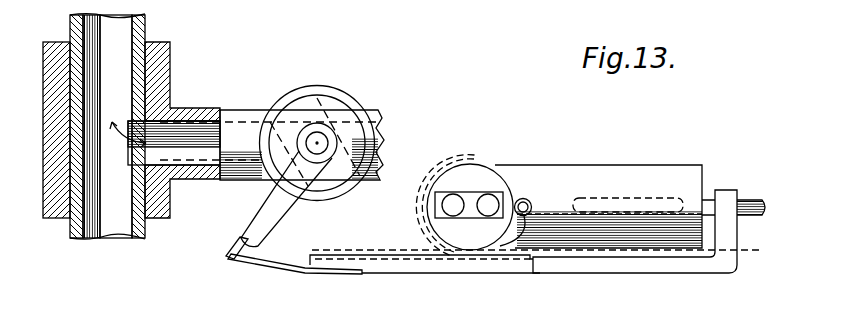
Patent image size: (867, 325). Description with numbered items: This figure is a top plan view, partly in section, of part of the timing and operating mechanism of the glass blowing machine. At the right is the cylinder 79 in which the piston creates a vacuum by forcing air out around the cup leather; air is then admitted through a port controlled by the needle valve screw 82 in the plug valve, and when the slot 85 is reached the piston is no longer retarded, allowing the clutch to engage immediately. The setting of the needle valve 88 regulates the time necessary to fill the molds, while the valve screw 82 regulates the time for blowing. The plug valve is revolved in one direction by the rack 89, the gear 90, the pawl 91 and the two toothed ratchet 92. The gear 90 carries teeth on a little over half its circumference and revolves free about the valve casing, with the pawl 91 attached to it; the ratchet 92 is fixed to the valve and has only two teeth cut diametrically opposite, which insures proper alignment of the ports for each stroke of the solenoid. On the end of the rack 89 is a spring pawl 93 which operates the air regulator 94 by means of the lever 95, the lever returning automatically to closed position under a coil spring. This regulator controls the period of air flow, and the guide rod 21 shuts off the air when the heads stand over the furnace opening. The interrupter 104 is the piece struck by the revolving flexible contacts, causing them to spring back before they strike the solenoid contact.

The guide rod 21 is at (143, 23).
The air regulator 94 is at (272, 128).
The lever 95 is at (270, 210).
The spring pawl 93 is at (227, 257).
The interrupter 104 is at (535, 287).
The rack 89 is at (582, 273).
The slot 85 is at (620, 198).
The cylinder 79 is at (630, 253).
The gear 90 is at (418, 210).
The two toothed ratchet 92 is at (430, 203).
The needle valve 88 is at (452, 213).
The needle valve screw 82 is at (485, 220).
The pawl 91 is at (513, 232).